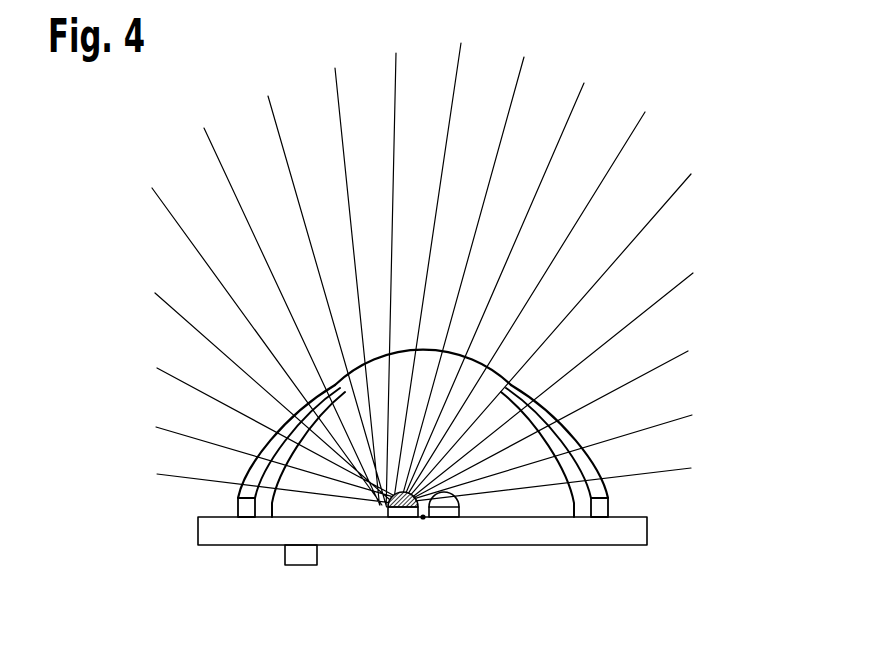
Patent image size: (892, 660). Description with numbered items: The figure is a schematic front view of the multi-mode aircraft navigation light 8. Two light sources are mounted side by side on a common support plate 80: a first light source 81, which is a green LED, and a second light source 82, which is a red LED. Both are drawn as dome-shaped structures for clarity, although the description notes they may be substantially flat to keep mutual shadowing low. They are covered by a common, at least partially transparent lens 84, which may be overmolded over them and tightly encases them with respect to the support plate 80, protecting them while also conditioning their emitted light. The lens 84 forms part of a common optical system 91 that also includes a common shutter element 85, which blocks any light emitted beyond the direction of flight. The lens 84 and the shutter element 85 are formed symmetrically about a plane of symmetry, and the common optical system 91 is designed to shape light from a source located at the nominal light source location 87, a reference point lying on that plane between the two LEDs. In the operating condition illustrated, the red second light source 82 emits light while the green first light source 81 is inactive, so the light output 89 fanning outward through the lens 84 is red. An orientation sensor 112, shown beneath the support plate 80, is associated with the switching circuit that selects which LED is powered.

The multi-mode aircraft navigation light 8 is at (178, 570).
The support plate 80 is at (620, 530).
The first light source 81 is at (443, 510).
The second light source 82 is at (403, 510).
The lens 84 is at (520, 359).
The shutter element 85 is at (590, 460).
The nominal light source location 87 is at (423, 519).
The light output 89 is at (612, 95).
The common optical system 91 is at (524, 429).
The orientation sensor 112 is at (303, 557).